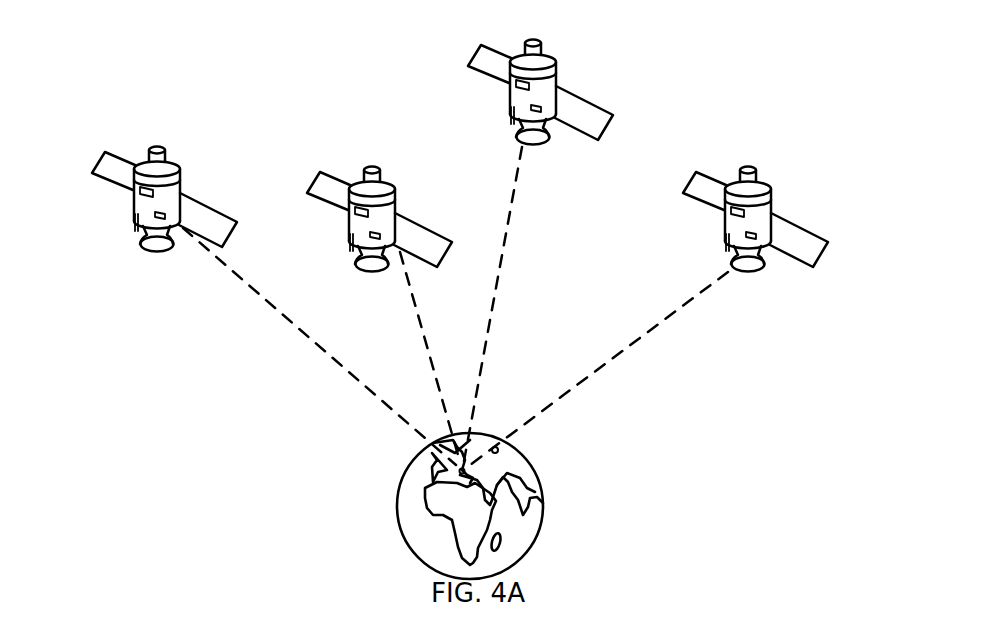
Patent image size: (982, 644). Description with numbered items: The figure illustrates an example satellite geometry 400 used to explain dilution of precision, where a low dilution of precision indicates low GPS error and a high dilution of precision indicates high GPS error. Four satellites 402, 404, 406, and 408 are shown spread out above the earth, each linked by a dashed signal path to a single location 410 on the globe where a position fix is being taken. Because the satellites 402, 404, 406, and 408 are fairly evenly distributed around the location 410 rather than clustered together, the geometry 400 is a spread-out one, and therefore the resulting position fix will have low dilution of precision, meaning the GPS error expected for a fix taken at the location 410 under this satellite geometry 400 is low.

The satellite geometry 400 is at (101, 68).
The satellite 402 is at (180, 156).
The satellite 404 is at (397, 191).
The satellite 406 is at (565, 55).
The satellite 408 is at (767, 172).
The location 410 is at (460, 470).